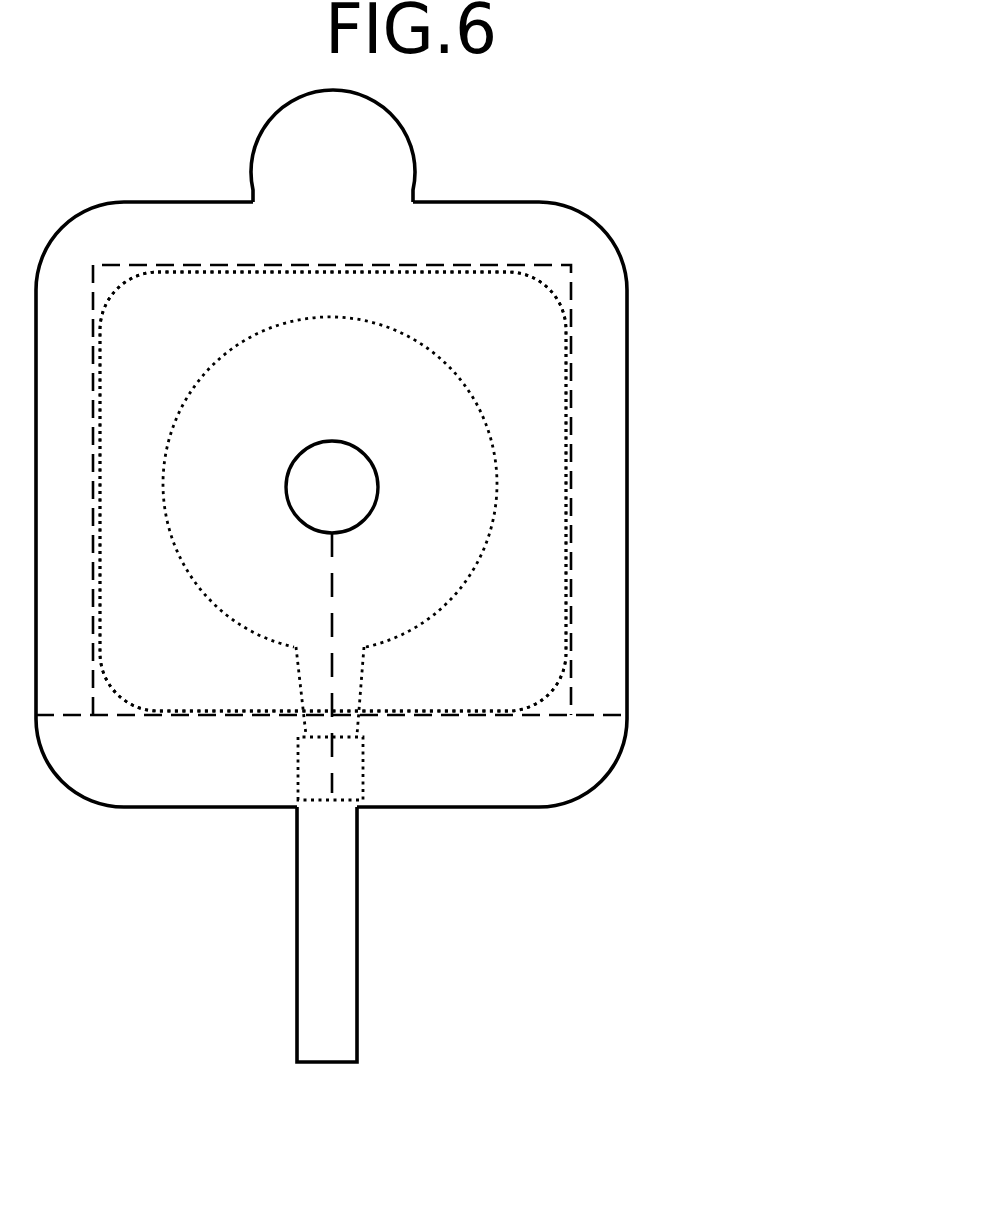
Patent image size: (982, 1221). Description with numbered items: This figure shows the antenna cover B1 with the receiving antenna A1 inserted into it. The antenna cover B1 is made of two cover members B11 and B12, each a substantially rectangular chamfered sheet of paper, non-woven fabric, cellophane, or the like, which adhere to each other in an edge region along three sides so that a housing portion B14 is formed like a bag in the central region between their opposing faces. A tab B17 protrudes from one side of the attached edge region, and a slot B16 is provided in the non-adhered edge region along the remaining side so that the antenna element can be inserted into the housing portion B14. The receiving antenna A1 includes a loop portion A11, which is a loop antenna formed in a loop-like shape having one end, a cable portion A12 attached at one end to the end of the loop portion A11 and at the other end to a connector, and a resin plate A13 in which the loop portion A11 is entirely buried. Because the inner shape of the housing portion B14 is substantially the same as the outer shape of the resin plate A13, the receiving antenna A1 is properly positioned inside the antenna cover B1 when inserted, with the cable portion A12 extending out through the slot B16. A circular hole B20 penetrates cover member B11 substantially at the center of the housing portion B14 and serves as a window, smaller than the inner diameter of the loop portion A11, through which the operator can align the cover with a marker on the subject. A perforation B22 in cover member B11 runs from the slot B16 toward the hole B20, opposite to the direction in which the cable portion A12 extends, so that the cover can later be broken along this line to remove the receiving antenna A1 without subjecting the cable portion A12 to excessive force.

The antenna cover B1 is at (592, 193).
The cover member B11 is at (628, 367).
The cover member B12 is at (331, 504).
The housing portion B14 is at (557, 298).
The slot B16 is at (256, 812).
The tab B17 is at (405, 172).
The circular hole B20 is at (365, 453).
The perforation B22 is at (330, 552).
The receiving antenna A1 is at (748, 523).
The loop portion A11 is at (497, 517).
The cable portion A12 is at (345, 858).
The resin plate A13 is at (557, 612).